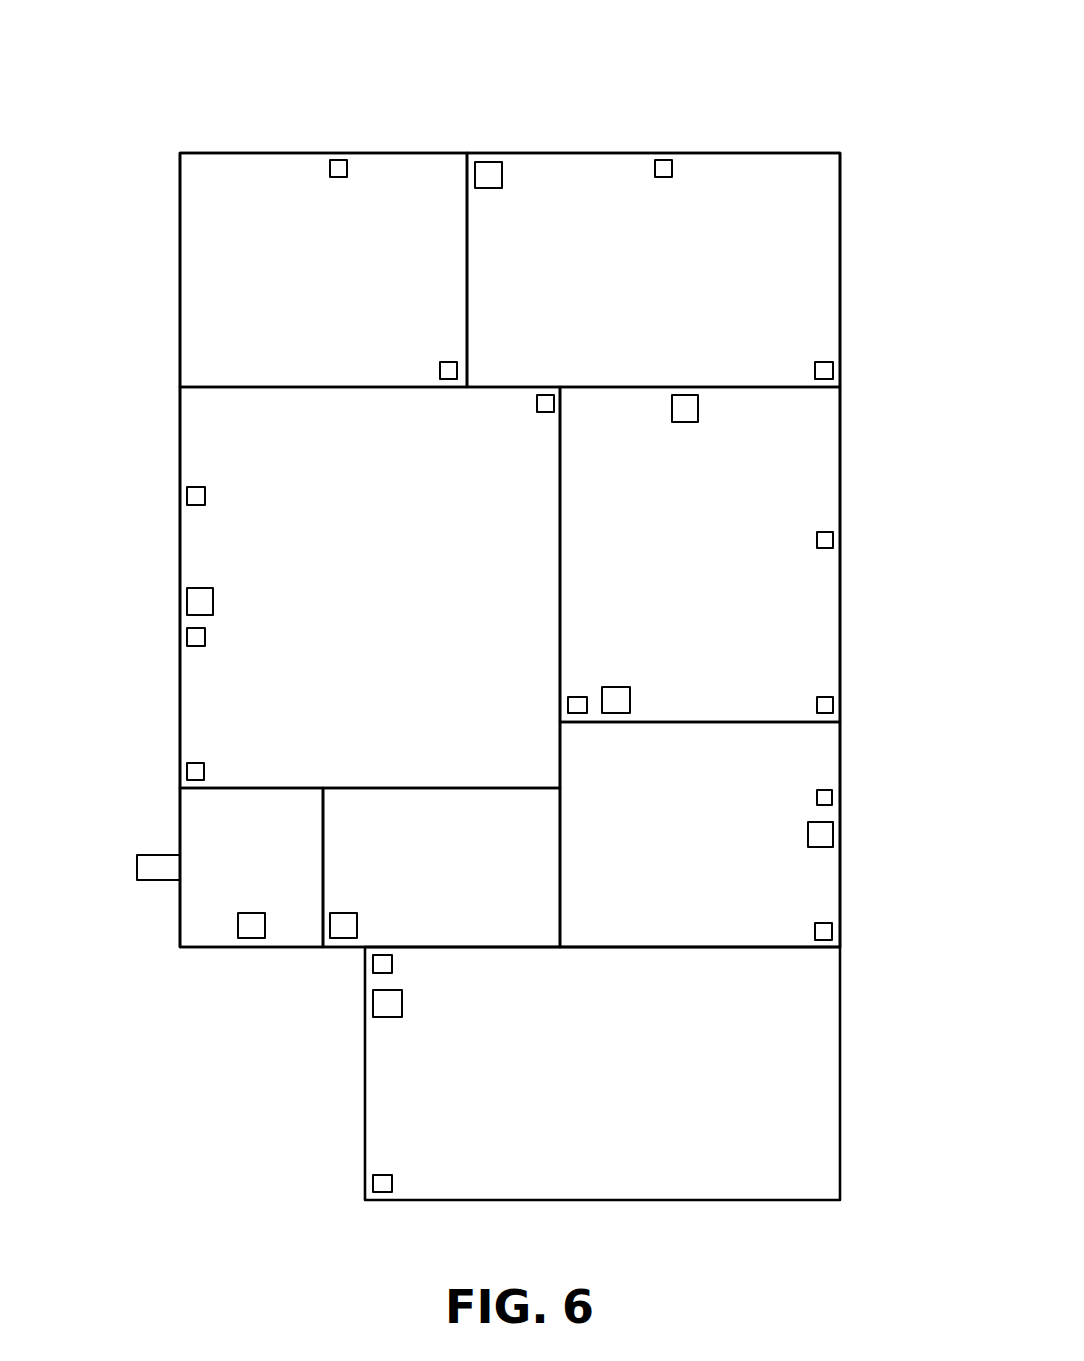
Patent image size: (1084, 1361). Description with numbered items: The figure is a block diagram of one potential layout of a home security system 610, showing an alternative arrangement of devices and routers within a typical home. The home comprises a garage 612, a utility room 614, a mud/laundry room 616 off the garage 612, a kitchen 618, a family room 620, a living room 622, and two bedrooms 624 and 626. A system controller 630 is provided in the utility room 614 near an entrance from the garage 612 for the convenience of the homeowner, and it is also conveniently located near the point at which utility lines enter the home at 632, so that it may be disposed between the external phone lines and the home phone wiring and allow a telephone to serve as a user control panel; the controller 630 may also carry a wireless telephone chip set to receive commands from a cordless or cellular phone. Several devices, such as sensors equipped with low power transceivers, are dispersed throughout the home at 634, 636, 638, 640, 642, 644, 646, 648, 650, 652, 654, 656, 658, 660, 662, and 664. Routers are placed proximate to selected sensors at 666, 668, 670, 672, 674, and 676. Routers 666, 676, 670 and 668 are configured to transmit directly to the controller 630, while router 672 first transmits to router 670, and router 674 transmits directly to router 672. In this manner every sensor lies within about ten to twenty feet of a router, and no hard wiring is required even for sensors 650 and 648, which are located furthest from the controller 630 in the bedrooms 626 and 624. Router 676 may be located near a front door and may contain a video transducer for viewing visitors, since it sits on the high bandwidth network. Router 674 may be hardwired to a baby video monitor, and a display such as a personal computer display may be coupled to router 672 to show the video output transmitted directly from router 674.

The home security system layout 610 is at (545, 92).
The garage 612 is at (802, 1163).
The utility room 614 is at (280, 823).
The mud/laundry room 616 is at (520, 927).
The kitchen 618 is at (642, 927).
The family room 620 is at (820, 452).
The living room 622 is at (520, 750).
The bedroom 624 is at (812, 207).
The bedroom 626 is at (260, 207).
The system controller 630 is at (357, 913).
The utility lines entry point 632 is at (137, 855).
The sensor 634 is at (392, 965).
The sensor 636 is at (392, 1175).
The sensor 638 is at (815, 923).
The sensor 640 is at (817, 798).
The sensor 642 is at (817, 697).
The sensor 644 is at (817, 540).
The sensor 646 is at (815, 362).
The sensor 648 is at (663, 177).
The sensor 650 is at (339, 177).
The sensor 652 is at (440, 362).
The sensor 654 is at (537, 412).
The sensor 656 is at (578, 697).
The sensor 658 is at (205, 496).
The sensor 660 is at (205, 637).
The sensor 662 is at (204, 763).
The sensor 664 is at (250, 947).
The router 666 is at (402, 1017).
The router 668 is at (808, 835).
The router 670 is at (630, 688).
The router 672 is at (685, 422).
The router 674 is at (502, 187).
The router 676 is at (213, 598).